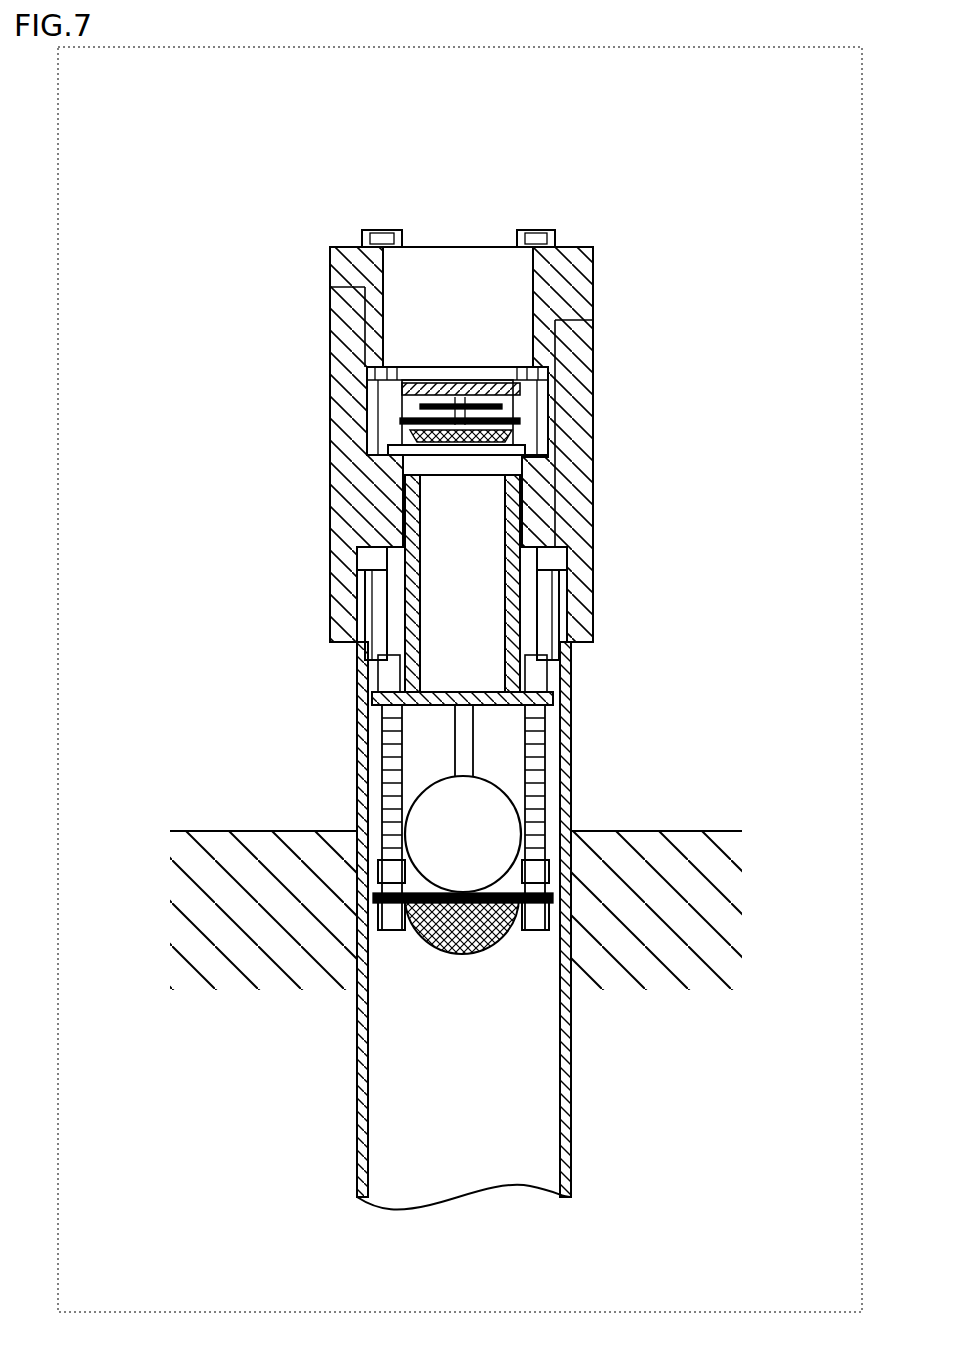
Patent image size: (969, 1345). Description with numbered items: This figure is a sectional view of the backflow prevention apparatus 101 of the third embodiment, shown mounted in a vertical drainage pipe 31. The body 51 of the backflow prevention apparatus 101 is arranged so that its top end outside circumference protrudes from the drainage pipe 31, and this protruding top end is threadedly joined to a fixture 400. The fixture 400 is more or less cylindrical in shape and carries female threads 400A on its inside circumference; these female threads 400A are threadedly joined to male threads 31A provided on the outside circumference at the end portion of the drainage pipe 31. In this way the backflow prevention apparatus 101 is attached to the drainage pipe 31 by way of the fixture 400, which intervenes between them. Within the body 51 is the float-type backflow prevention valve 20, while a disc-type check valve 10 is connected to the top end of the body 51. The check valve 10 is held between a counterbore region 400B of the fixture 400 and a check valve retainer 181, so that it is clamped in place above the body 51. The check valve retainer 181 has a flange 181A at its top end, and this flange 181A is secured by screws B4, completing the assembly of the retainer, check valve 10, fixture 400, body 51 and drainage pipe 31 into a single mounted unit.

The backflow prevention apparatus 101 is at (628, 225).
The check valve retainer 181 is at (570, 340).
The flange 181A is at (333, 248).
The screws B4 is at (520, 232).
The fixture 400 is at (367, 412).
The counterbore region 400B is at (367, 463).
The female threads 400A is at (357, 578).
The check valve 10 is at (433, 352).
The male threads 31A is at (598, 545).
The body 51 is at (573, 623).
The drainage pipe 31 is at (573, 812).
The float-type backflow prevention valve 20 is at (430, 1077).